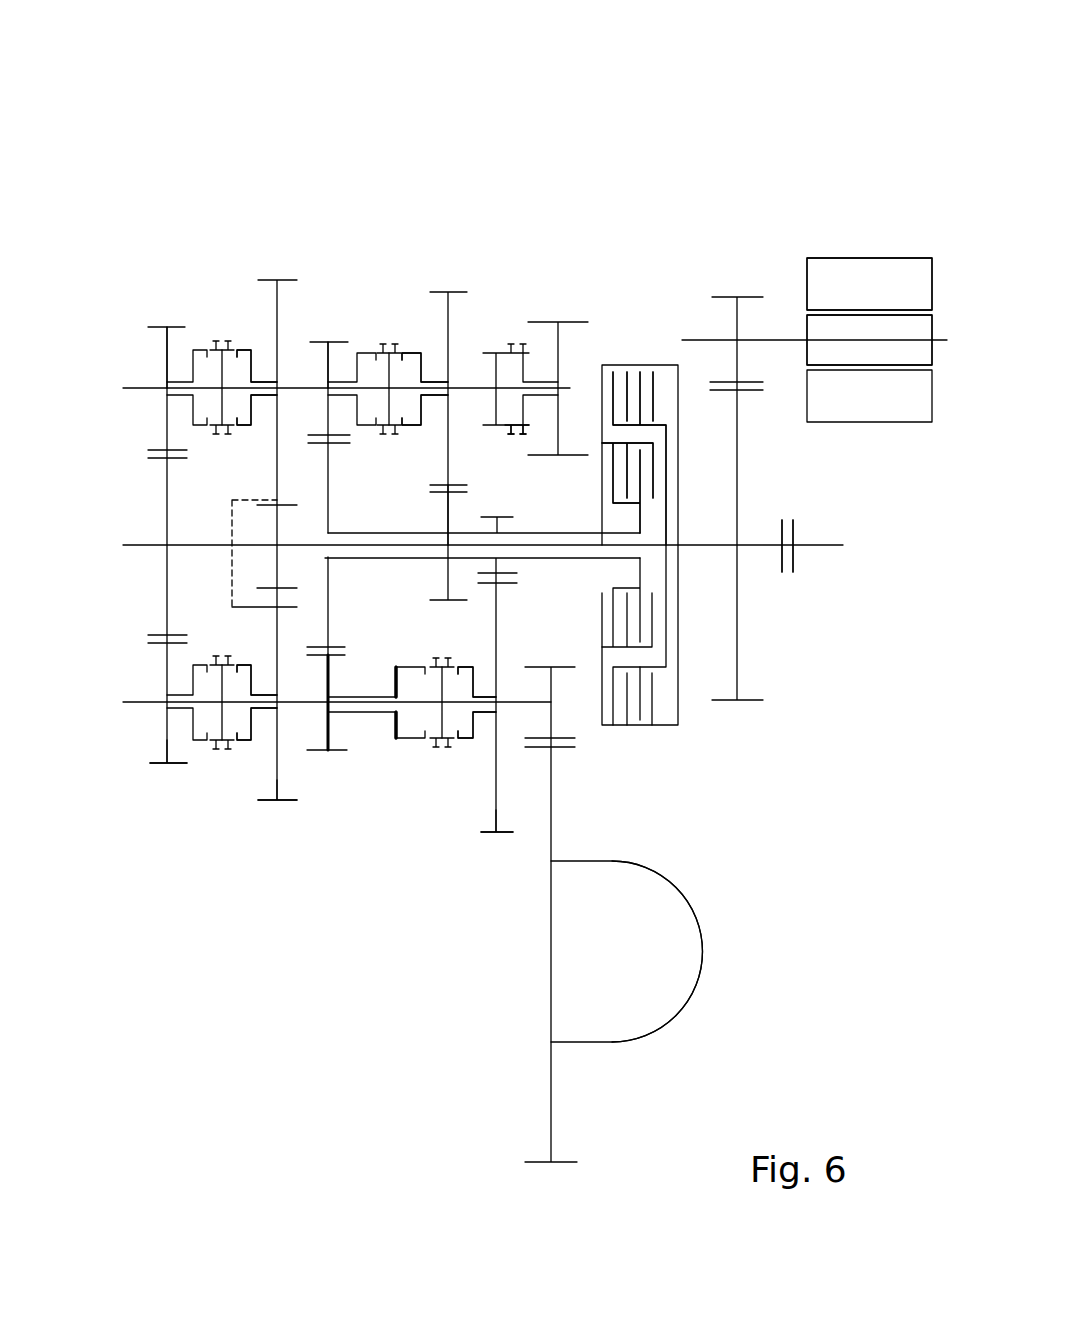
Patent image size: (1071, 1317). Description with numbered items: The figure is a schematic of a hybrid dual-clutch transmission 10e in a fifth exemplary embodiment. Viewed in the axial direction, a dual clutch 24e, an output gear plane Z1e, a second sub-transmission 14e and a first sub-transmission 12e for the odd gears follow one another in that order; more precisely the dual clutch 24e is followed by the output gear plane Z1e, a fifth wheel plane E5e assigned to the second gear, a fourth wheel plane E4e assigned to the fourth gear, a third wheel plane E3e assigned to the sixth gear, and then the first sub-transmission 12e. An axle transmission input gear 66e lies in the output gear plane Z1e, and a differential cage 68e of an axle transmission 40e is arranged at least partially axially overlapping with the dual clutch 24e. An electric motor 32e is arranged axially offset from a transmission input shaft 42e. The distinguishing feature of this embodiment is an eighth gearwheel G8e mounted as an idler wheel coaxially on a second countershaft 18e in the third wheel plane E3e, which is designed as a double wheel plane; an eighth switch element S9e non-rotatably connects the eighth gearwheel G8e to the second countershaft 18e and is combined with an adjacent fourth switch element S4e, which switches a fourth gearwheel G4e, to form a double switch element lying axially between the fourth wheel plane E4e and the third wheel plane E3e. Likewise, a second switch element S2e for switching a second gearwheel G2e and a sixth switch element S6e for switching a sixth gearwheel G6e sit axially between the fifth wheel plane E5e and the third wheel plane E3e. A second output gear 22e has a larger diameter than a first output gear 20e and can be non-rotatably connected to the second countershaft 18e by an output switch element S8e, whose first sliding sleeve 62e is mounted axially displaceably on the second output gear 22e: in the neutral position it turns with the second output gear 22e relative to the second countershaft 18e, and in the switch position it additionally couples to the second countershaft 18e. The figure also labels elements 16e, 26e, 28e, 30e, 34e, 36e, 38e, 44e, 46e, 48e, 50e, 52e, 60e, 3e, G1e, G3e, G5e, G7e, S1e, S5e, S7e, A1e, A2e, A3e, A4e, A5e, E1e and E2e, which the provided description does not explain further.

The hybrid dual-clutch transmission 10e is at (729, 118).
The first sub-transmission 12e is at (218, 144).
The second sub-transmission 14e is at (378, 124).
The input shaft 16e is at (123, 703).
The second countershaft 18e is at (145, 385).
The first output gear 20e is at (552, 718).
The second output gear 22e is at (577, 533).
The dual clutch 24e is at (636, 350).
The first brake 26e is at (696, 398).
The second brake 28e is at (668, 461).
The differential gear 30e is at (784, 582).
The electric motor 32e is at (876, 218).
The stator 34e is at (912, 287).
The rotor 36e is at (835, 330).
The rotor shaft 38e is at (823, 550).
The axle transmission 40e is at (728, 958).
The transmission input shaft 42e is at (758, 548).
The main shaft 44e is at (123, 545).
The transmission housing 46e is at (640, 495).
The actuator 48e is at (218, 765).
The actuator 50e is at (218, 325).
The actuator 52e is at (436, 767).
The intermediate shaft 60e is at (733, 268).
The first sliding sleeve 62e is at (517, 436).
The axle transmission input gear 66e is at (552, 995).
The differential cage 68e is at (690, 1002).
The shifting element 3e is at (241, 341).
The gear G1e is at (277, 610).
The second gearwheel G2e is at (500, 773).
The gear G3e is at (257, 280).
The fourth gearwheel G4e is at (447, 325).
The gear G5e is at (167, 663).
The sixth gearwheel G6e is at (348, 742).
The gear G7e is at (167, 404).
The eighth gearwheel G8e is at (327, 372).
The shifting element S1e is at (243, 756).
The second switch element S2e is at (464, 756).
The fourth switch element S4e is at (404, 334).
The shifting element S5e is at (193, 756).
The sixth switch element S6e is at (396, 756).
The shifting element S7e is at (194, 341).
The output switch element S8e is at (496, 324).
The eighth switch element S9e is at (368, 336).
The axle A1e is at (160, 460).
The axle A2e is at (277, 572).
The axle A3e is at (328, 467).
The axle A4e is at (447, 508).
The axle A5e is at (497, 563).
The gear plane E1e is at (163, 781).
The gear plane E2e is at (323, 767).
The third wheel plane E3e is at (273, 815).
The fourth wheel plane E4e is at (444, 274).
The fifth wheel plane E5e is at (496, 851).
The output gear plane Z1e is at (554, 301).